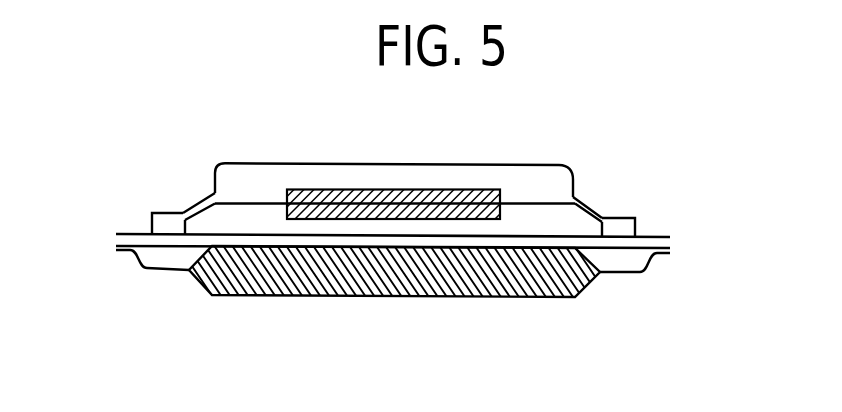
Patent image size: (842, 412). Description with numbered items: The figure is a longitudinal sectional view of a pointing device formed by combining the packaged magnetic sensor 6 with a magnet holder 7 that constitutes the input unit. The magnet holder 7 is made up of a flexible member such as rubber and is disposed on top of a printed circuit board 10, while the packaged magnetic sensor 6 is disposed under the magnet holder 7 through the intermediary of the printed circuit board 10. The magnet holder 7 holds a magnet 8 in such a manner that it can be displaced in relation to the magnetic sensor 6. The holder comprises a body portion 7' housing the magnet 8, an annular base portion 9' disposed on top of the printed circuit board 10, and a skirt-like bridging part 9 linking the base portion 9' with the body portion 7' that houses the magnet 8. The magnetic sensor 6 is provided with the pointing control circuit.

The magnetic sensor 6 is at (448, 297).
The magnet holder 7 is at (435, 155).
The body portion 7' is at (414, 127).
The magnet 8 is at (432, 190).
The bridging part 9 is at (378, 177).
The base portion 9' is at (371, 195).
The printed circuit board 10 is at (663, 240).